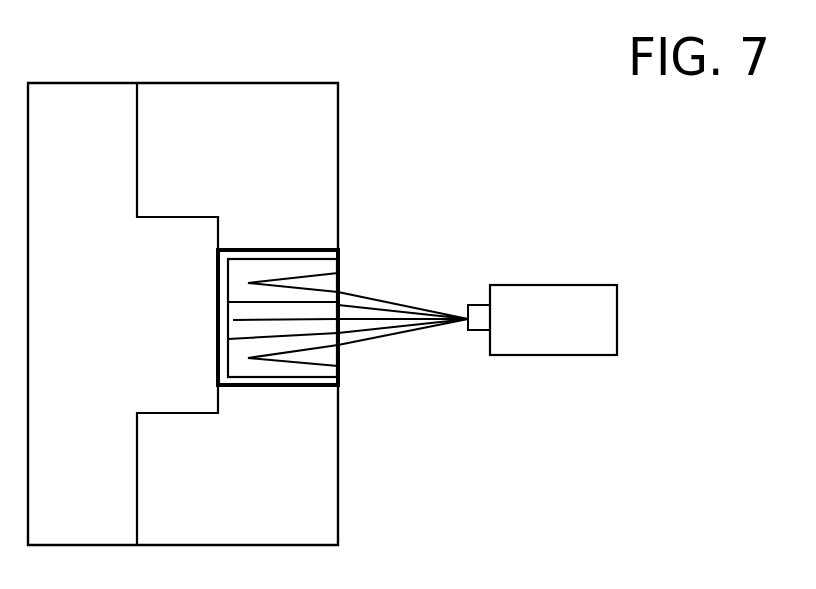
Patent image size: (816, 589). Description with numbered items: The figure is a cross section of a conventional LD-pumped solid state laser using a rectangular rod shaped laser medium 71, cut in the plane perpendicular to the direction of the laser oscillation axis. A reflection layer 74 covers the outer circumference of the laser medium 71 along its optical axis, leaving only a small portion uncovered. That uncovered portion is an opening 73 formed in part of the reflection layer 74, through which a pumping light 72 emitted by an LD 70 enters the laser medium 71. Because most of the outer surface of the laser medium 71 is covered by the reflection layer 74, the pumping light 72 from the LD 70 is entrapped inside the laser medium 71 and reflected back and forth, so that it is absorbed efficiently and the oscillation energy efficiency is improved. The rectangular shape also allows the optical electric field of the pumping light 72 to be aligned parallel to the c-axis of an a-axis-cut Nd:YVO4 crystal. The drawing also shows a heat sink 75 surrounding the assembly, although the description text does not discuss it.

The LD 70 is at (535, 356).
The laser medium 71 is at (250, 270).
The pumping light 72 is at (388, 302).
The opening 73 is at (338, 253).
The reflection layer 74 is at (307, 390).
The heat sink 75 is at (313, 472).